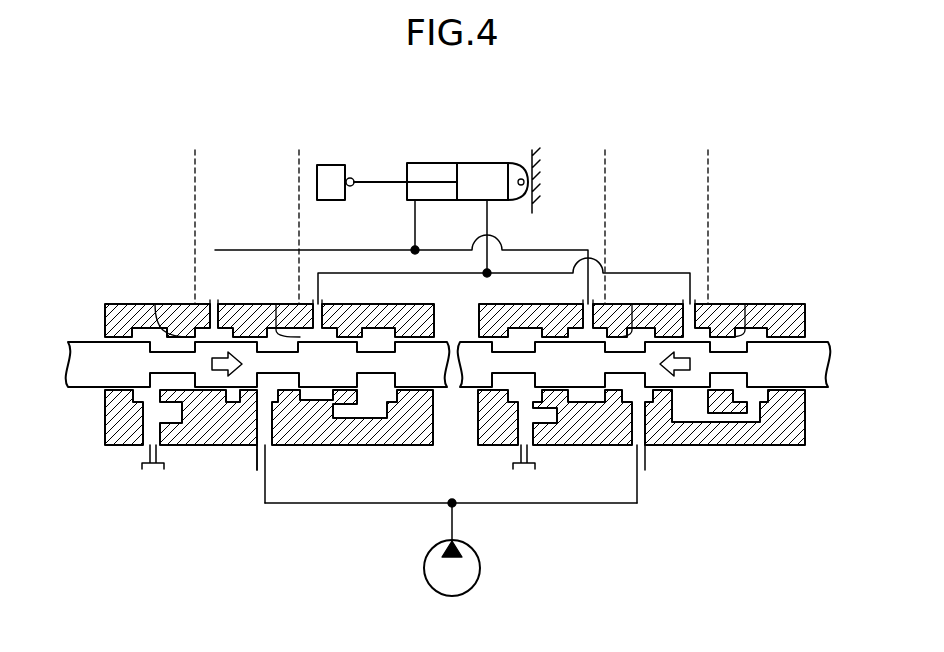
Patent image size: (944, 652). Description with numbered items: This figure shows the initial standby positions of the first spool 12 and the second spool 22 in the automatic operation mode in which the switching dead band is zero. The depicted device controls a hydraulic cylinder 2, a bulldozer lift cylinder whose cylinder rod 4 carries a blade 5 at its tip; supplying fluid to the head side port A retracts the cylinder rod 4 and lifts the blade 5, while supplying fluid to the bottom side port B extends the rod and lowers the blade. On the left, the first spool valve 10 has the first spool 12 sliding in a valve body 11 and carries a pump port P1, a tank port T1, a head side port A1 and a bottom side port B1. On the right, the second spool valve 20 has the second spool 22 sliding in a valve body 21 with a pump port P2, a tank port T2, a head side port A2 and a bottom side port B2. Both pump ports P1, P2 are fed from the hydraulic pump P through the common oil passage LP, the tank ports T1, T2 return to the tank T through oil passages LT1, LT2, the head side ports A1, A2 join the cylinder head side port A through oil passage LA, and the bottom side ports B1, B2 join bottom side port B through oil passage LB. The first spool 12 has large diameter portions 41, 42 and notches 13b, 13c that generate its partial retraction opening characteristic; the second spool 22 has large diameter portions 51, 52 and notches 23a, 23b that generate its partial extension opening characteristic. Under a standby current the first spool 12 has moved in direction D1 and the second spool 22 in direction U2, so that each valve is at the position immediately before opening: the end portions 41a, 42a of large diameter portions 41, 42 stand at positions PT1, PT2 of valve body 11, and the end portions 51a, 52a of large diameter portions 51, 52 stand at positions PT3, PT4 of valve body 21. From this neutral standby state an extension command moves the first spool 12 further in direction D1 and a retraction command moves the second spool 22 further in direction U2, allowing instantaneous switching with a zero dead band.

The hydraulic cylinder 2 is at (476, 164).
The cylinder rod 4 is at (375, 181).
The blade 5 is at (323, 164).
The first spool valve 10 is at (127, 292).
The valve body 11 is at (105, 322).
The first spool 12 is at (68, 360).
The notch 13b is at (218, 372).
The notch 13c is at (367, 372).
The second spool valve 20 is at (812, 292).
The valve body 21 is at (805, 320).
The second spool 22 is at (828, 360).
The notch 23a is at (575, 372).
The notch 23b is at (640, 372).
The large diameter portion 41 is at (207, 372).
The end portion 41a is at (155, 304).
The large diameter portion 42 is at (322, 372).
The end portion 42a is at (276, 304).
The large diameter portion 51 is at (590, 372).
The end portion 51a is at (632, 304).
The large diameter portion 52 is at (672, 372).
The end portion 52a is at (745, 304).
The position PT1 is at (196, 216).
The position PT2 is at (298, 216).
The position PT3 is at (605, 216).
The position PT4 is at (708, 216).
The head side port A is at (410, 204).
The bottom side port B is at (494, 204).
The oil passage LA is at (420, 238).
The oil passage LB is at (490, 224).
The head side port A1 is at (210, 300).
The bottom side port B1 is at (324, 302).
The head side port A2 is at (580, 302).
The bottom side port B2 is at (703, 302).
The direction D1 is at (233, 445).
The direction U2 is at (722, 445).
The tank port T1 is at (148, 456).
The tank port T2 is at (520, 456).
The oil passage LT1 is at (160, 462).
The oil passage LT2 is at (537, 464).
The tank T is at (150, 470).
The pump port P1 is at (270, 456).
The pump port P2 is at (650, 463).
The oil passage LP is at (385, 503).
The hydraulic pump P is at (480, 568).